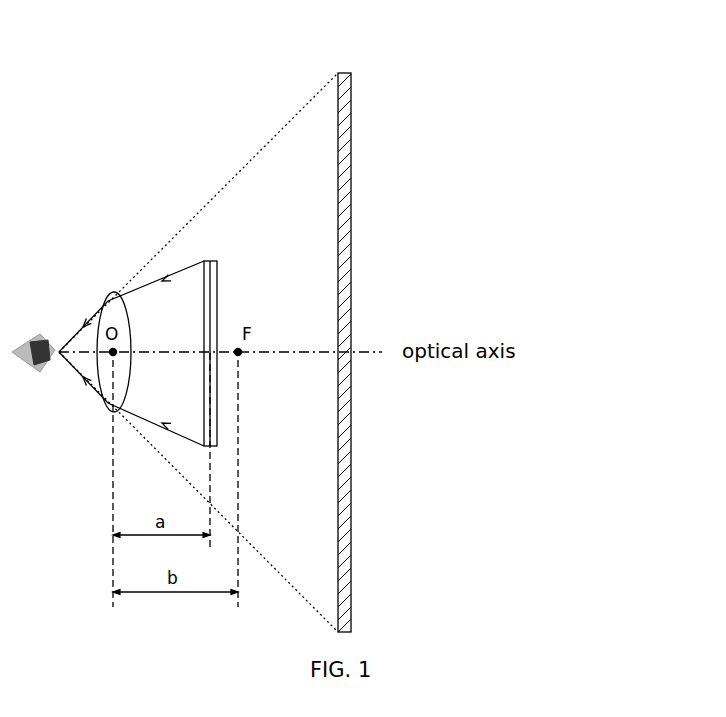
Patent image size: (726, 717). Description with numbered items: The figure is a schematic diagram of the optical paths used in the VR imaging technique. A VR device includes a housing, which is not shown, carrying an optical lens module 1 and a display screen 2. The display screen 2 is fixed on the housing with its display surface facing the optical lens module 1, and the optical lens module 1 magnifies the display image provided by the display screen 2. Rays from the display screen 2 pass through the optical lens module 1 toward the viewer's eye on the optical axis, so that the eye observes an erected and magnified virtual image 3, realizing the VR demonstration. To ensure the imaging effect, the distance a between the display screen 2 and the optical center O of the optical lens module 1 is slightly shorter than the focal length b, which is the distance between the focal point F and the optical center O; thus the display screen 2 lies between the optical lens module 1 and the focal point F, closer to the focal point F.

The optical lens module 1 is at (107, 294).
The display screen 2 is at (218, 280).
The virtual image 3 is at (352, 138).